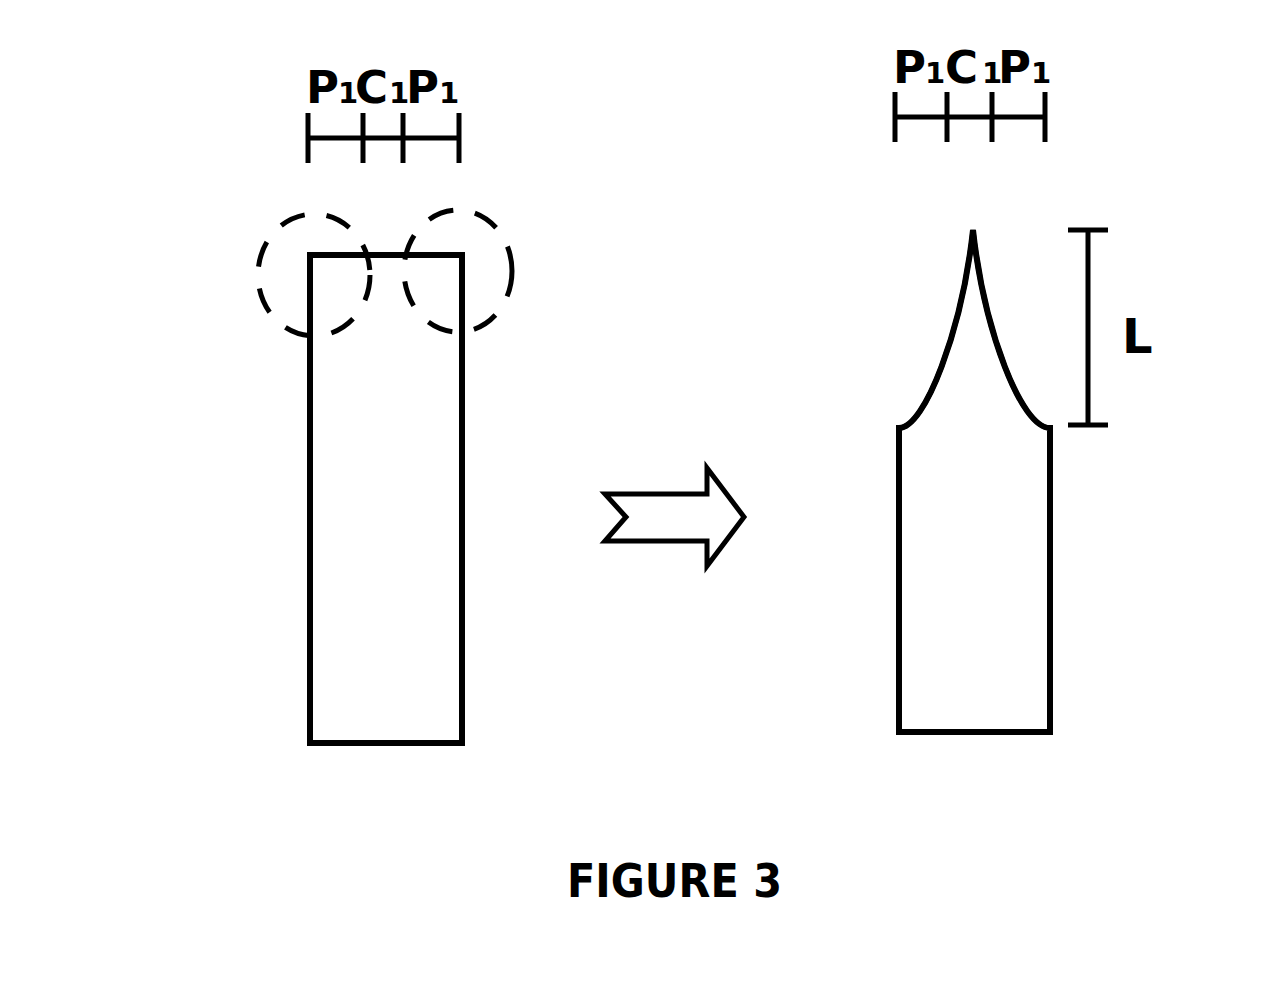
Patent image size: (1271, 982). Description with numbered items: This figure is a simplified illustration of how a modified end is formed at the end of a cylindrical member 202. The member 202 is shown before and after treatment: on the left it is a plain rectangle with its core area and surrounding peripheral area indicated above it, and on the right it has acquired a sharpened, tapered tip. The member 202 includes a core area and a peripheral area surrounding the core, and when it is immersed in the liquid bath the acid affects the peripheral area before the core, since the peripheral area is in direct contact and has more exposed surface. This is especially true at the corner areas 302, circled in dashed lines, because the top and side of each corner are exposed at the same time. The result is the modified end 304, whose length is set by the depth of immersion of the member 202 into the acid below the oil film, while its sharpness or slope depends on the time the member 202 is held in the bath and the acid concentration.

The cylindrical member 202 is at (313, 510).
The corner areas 302 is at (258, 270).
The modified end 304 is at (882, 228).